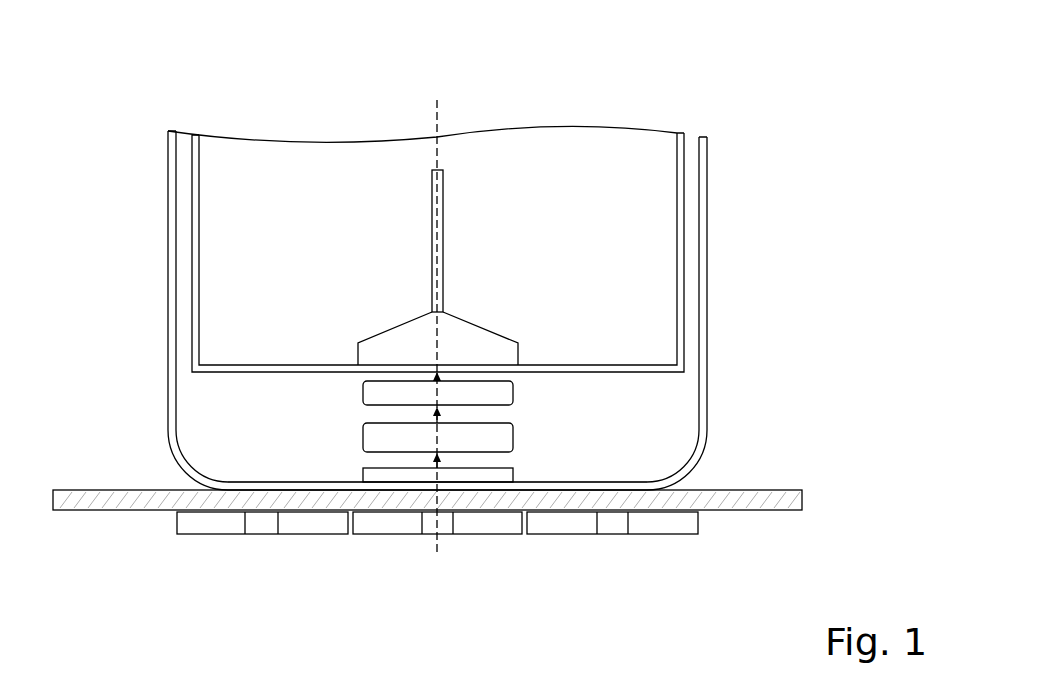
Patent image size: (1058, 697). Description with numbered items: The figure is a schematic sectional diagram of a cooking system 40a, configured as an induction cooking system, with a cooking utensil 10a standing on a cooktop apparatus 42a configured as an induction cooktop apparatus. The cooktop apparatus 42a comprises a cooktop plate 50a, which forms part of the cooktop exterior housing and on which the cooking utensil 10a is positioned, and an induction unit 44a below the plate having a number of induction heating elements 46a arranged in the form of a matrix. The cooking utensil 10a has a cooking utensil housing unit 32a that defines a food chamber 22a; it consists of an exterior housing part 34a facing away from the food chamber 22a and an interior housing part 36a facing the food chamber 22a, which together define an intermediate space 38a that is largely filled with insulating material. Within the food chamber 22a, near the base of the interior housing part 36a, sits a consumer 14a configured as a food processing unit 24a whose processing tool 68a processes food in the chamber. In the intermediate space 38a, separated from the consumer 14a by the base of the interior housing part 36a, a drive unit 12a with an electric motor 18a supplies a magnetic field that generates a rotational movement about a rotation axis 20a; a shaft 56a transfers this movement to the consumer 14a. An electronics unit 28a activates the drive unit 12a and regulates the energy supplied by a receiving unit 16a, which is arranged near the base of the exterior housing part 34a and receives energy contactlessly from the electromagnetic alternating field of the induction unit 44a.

The cooking utensil 10a is at (752, 148).
The drive unit 12a is at (525, 387).
The consumer 14a is at (483, 297).
The receiving unit 16a is at (505, 478).
The electric motor 18a is at (490, 396).
The rotation axis 20a is at (440, 110).
The food chamber 22a is at (318, 219).
The food processing unit 24a is at (483, 322).
The electronics unit 28a is at (497, 436).
The cooking utensil housing unit 32a is at (710, 205).
The exterior housing part 34a is at (707, 262).
The interior housing part 36a is at (677, 133).
The intermediate space 38a is at (302, 444).
The cooking system 40a is at (796, 100).
The cooktop apparatus 42a is at (795, 460).
The induction unit 44a is at (176, 523).
The induction heating elements 46a is at (212, 523).
The cooktop plate 50a is at (88, 500).
The shaft 56a is at (437, 365).
The processing tool 68a is at (463, 337).